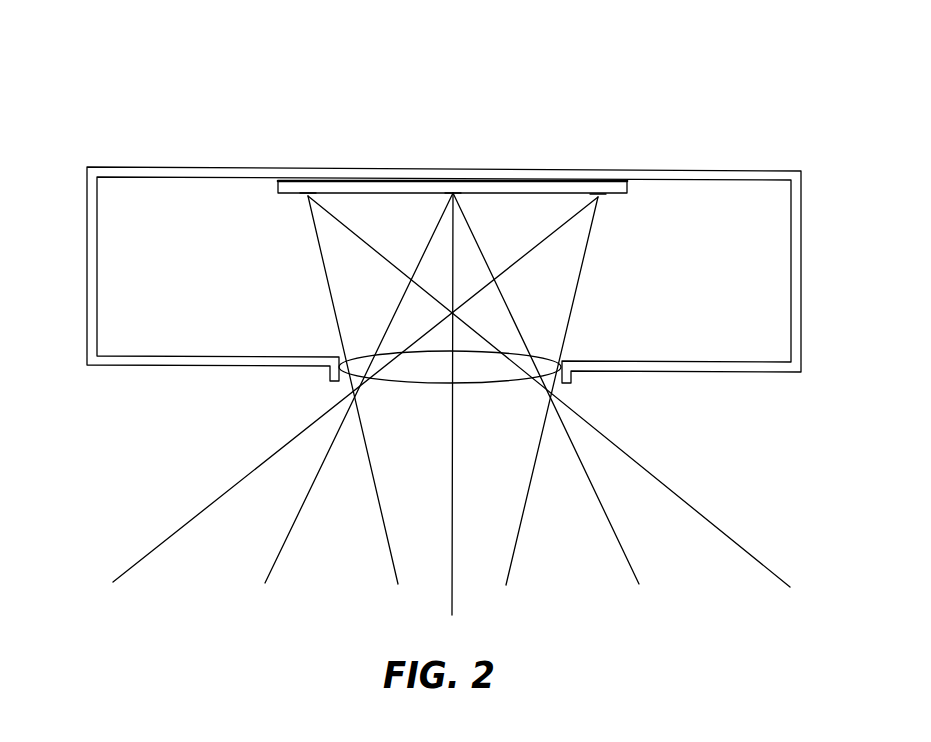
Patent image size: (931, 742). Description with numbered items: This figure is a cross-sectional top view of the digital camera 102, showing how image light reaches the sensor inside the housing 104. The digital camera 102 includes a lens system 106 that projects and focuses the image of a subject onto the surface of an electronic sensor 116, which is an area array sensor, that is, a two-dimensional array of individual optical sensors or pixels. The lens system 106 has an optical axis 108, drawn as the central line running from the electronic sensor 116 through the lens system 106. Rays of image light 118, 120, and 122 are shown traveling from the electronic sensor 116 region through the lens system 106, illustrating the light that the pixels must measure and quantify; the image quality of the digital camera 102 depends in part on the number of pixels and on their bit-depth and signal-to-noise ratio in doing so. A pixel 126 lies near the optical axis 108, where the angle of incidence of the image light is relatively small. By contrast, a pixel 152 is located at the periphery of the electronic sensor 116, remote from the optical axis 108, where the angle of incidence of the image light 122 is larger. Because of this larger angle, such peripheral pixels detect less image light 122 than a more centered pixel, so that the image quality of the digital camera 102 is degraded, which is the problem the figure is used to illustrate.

The digital camera 102 is at (120, 118).
The housing 104 is at (801, 253).
The lens system 106 is at (405, 380).
The optical axis 108 is at (452, 614).
The electronic sensor 116 is at (280, 195).
The image light 118 is at (328, 293).
The image light 120 is at (441, 213).
The image light 122 is at (577, 292).
The pixel 126 is at (455, 194).
The pixel 152 is at (600, 200).